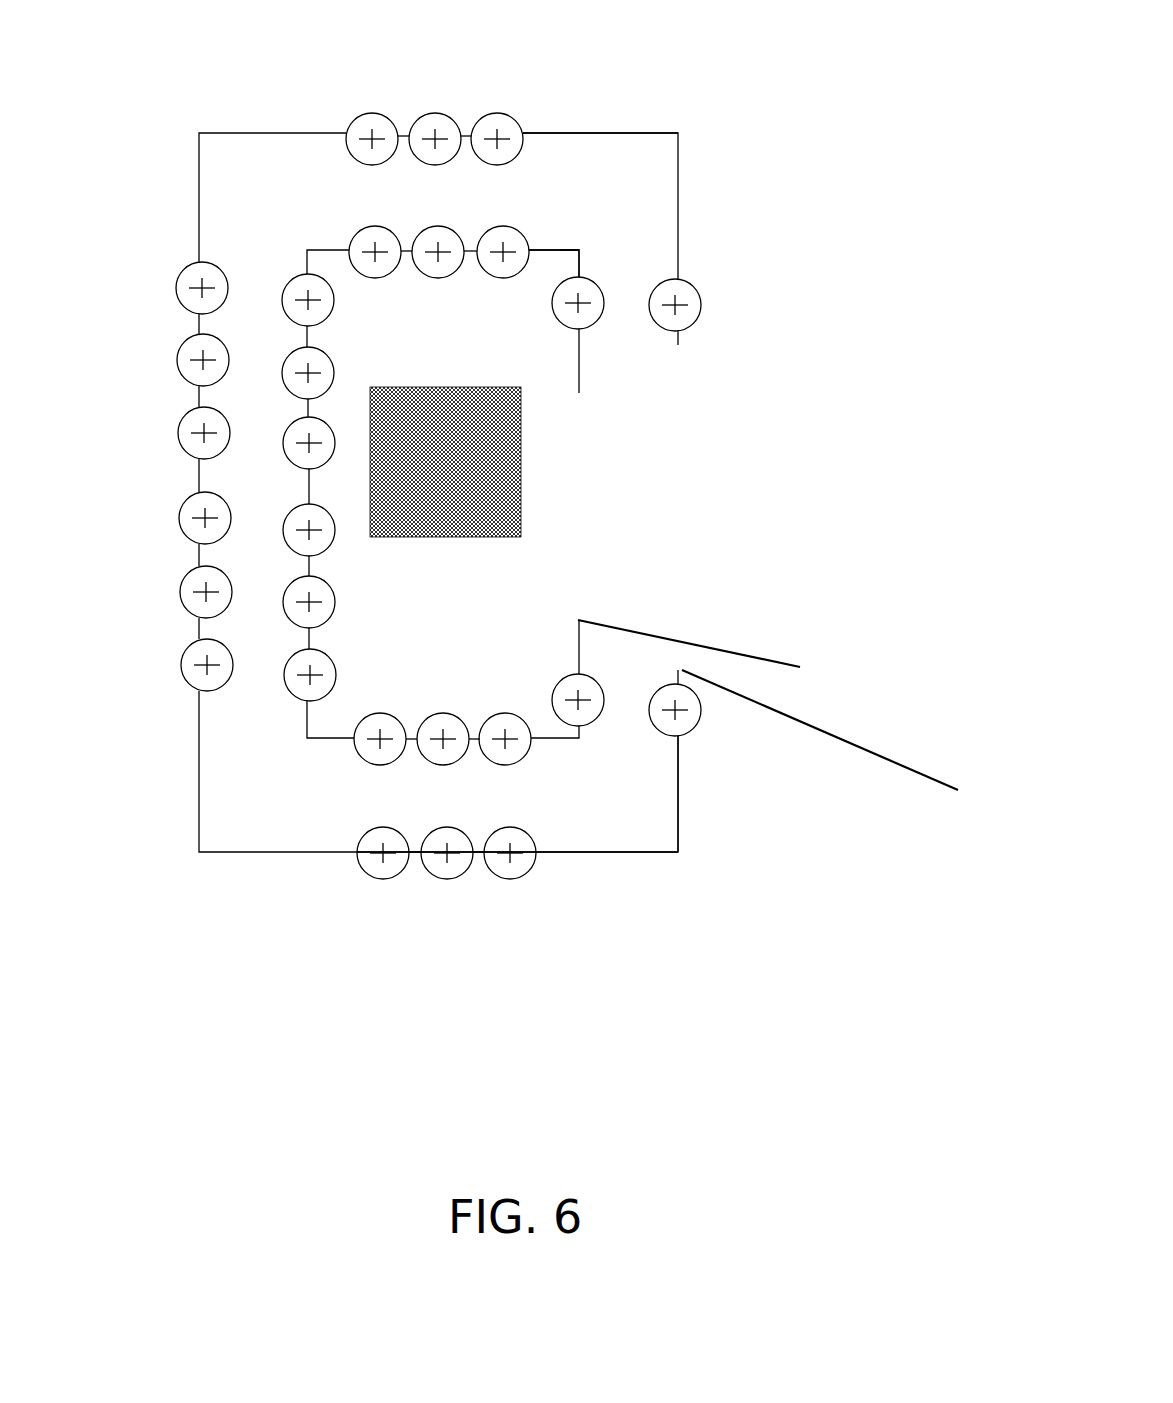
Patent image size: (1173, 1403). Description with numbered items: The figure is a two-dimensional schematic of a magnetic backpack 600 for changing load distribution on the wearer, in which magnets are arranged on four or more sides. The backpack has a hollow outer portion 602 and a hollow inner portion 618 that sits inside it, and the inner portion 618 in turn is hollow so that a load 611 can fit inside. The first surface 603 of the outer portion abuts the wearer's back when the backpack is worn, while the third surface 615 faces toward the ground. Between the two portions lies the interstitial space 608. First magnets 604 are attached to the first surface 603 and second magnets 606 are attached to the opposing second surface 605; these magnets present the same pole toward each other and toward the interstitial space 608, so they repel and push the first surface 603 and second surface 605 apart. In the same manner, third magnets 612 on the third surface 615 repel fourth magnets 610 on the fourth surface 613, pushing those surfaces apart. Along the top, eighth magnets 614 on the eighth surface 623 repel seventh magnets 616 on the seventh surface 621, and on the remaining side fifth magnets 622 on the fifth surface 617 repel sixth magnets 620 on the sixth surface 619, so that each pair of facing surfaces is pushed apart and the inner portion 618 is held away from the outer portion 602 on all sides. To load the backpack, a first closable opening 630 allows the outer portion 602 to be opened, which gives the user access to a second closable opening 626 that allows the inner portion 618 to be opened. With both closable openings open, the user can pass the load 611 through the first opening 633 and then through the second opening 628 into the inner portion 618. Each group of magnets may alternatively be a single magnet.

The magnetic backpack 600 is at (897, 1144).
The outer portion 602 is at (198, 133).
The first surface 603 is at (199, 205).
The first magnets 604 is at (184, 271).
The second surface 605 is at (305, 335).
The second magnets 606 is at (293, 688).
The interstitial space 608 is at (262, 788).
The fourth magnets 610 is at (357, 737).
The load 611 is at (522, 451).
The third magnets 612 is at (377, 860).
The fourth surface 613 is at (550, 738).
The eighth magnets 614 is at (362, 115).
The third surface 615 is at (620, 855).
The seventh magnets 616 is at (365, 228).
The fifth surface 617 is at (682, 775).
The inner portion 618 is at (580, 250).
The sixth surface 619 is at (582, 733).
The sixth magnets 620 is at (600, 285).
The seventh surface 621 is at (550, 248).
The fifth magnets 622 is at (698, 297).
The eighth surface 623 is at (550, 132).
The second closable opening 626 is at (588, 620).
The second opening 628 is at (592, 484).
The first closable opening 630 is at (809, 723).
The first opening 633 is at (694, 606).